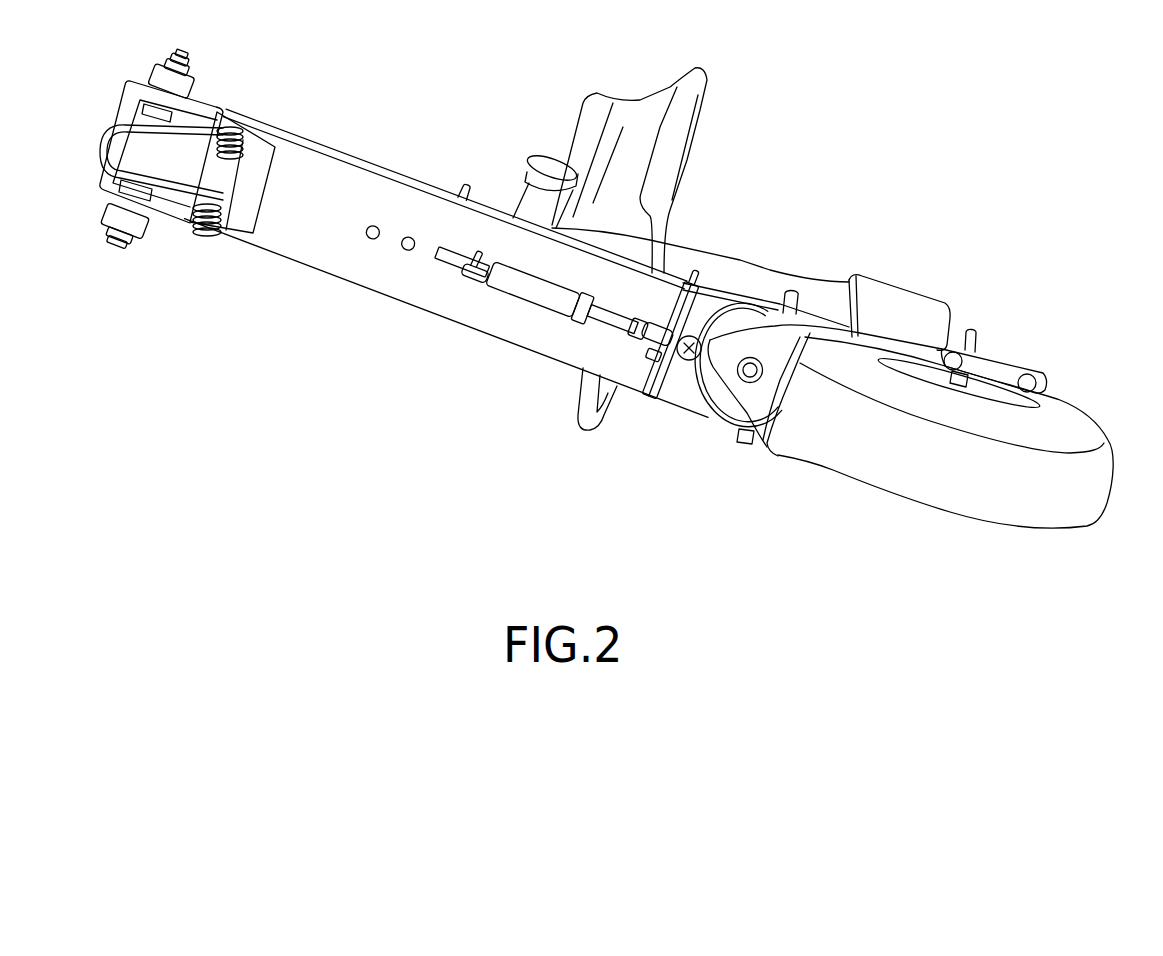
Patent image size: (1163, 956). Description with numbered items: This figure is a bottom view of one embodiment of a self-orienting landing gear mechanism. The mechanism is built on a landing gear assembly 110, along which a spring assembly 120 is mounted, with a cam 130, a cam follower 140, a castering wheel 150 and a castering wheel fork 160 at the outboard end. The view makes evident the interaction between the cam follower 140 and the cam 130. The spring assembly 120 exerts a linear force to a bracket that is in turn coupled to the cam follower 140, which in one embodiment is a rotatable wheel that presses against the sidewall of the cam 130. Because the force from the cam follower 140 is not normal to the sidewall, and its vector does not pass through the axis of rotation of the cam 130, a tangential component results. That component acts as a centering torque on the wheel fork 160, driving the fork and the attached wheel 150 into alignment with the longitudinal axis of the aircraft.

The landing gear assembly 110 is at (324, 217).
The spring assembly 120 is at (528, 287).
The cam 130 is at (750, 316).
The cam follower 140 is at (660, 405).
The castering wheel 150 is at (932, 466).
The castering wheel fork 160 is at (790, 450).